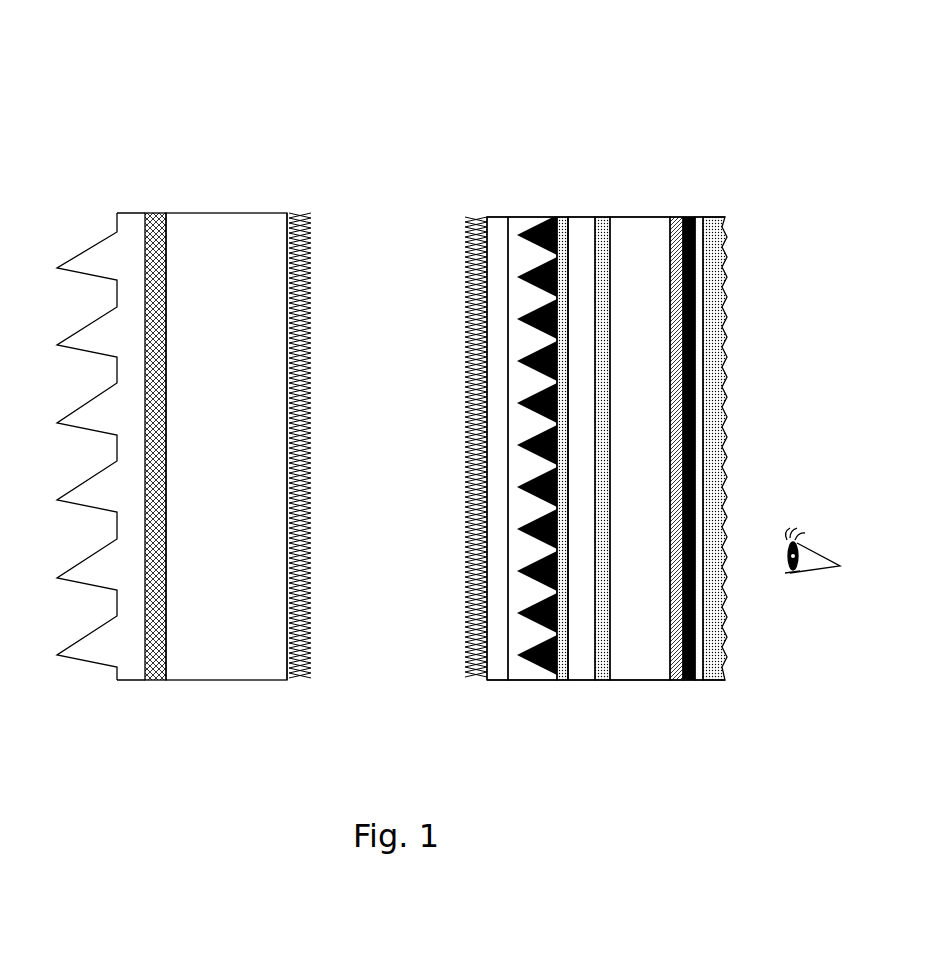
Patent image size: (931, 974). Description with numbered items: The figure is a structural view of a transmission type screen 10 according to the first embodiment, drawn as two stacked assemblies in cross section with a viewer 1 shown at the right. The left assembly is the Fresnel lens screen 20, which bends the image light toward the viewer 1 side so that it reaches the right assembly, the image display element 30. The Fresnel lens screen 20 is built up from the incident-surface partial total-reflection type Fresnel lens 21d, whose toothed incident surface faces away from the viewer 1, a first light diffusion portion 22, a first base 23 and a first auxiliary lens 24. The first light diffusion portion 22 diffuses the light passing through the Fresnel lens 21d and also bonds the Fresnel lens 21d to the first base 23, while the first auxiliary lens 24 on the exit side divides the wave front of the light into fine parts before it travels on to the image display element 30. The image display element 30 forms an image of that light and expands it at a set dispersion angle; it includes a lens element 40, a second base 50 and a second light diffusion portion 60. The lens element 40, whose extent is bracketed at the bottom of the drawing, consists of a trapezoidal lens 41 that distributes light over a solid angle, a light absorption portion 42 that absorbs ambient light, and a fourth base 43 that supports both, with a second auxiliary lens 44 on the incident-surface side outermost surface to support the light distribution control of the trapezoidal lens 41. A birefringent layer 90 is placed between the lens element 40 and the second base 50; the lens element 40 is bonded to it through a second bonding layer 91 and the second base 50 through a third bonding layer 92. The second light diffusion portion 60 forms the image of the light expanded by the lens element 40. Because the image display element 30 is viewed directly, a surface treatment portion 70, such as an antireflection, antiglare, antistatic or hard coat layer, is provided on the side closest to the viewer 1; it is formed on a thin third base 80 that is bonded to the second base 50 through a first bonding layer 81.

The viewer 1 is at (812, 544).
The transmission type screen 10 is at (722, 98).
The Fresnel lens screen 20 is at (320, 202).
The incident-surface partial total-reflection type Fresnel lens 21d is at (101, 446).
The first light diffusion portion 22 is at (167, 214).
The first base 23 is at (226, 446).
The first auxiliary lens 24 is at (307, 218).
The image display element 30 is at (722, 157).
The lens element 40 is at (556, 690).
The trapezoidal lens 41 is at (540, 220).
The light absorption portion 42 is at (532, 218).
The fourth base 43 is at (497, 222).
The second auxiliary lens 44 is at (473, 218).
The second base 50 is at (640, 448).
The second light diffusion portion 60 is at (677, 217).
The surface treatment portion 70 is at (717, 667).
The third base 80 is at (702, 302).
The first bonding layer 81 is at (690, 565).
The birefringent layer 90 is at (579, 648).
The second bonding layer 91 is at (568, 600).
The third bonding layer 92 is at (600, 667).